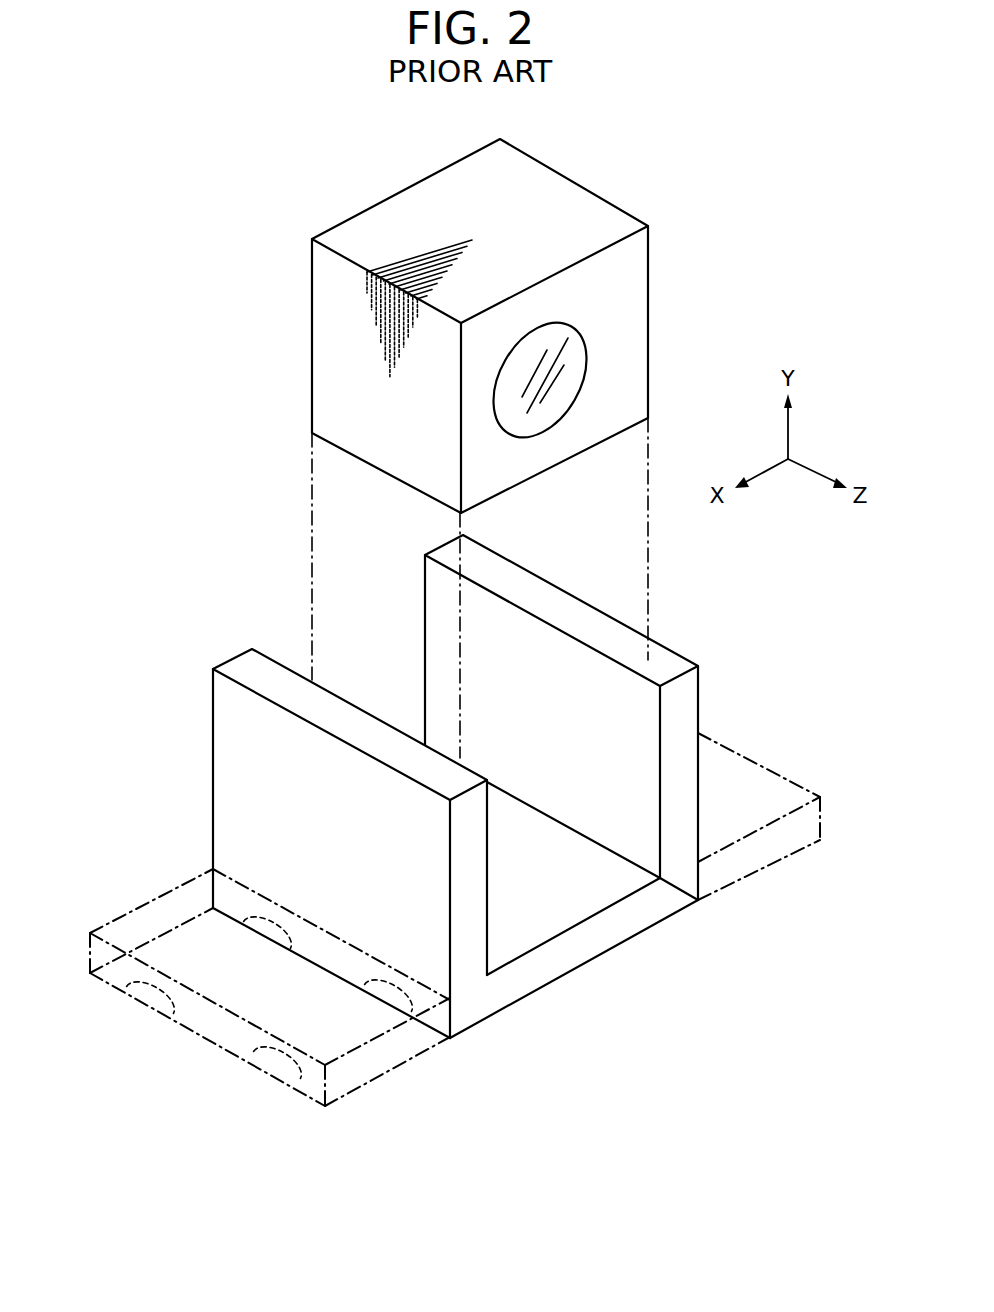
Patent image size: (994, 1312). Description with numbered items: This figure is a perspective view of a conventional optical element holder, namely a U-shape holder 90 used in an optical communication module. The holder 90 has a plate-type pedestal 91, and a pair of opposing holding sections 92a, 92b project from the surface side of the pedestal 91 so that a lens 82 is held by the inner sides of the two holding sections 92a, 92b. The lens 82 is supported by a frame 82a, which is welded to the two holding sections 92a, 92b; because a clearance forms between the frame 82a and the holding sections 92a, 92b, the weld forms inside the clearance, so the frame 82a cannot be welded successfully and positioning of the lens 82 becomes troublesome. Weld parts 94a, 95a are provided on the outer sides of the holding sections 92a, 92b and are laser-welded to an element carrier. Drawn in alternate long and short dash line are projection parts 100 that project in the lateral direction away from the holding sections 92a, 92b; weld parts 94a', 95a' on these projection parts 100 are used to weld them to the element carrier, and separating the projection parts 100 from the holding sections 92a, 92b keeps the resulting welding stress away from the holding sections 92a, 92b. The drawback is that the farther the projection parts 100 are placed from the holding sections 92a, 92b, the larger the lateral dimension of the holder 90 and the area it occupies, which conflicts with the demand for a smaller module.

The lens 82 is at (585, 360).
The frame 82a is at (632, 293).
The U-shape holder 90 is at (745, 672).
The plate-type pedestal 91 is at (544, 911).
The holding section 92a is at (245, 793).
The holding section 92b is at (632, 790).
The projection part 100 is at (148, 917).
The weld part 94a is at (214, 1017).
The weld part 94a' is at (119, 1037).
The weld part 95a is at (389, 1065).
The weld part 95a' is at (250, 1108).